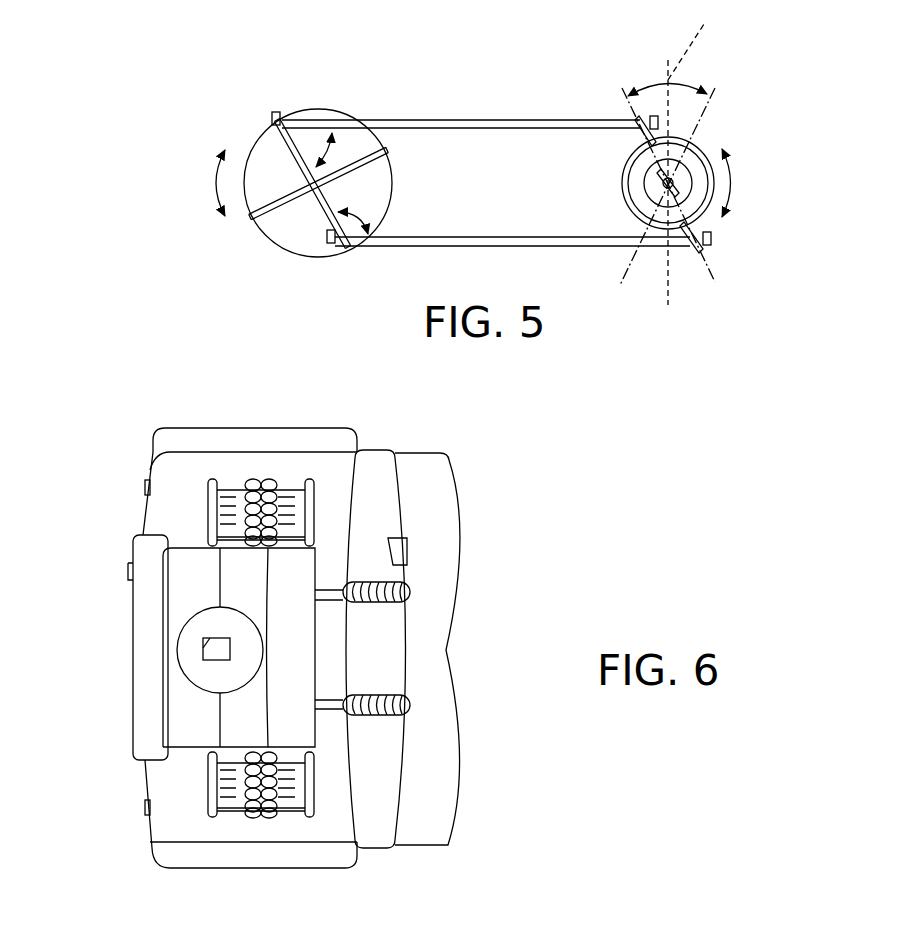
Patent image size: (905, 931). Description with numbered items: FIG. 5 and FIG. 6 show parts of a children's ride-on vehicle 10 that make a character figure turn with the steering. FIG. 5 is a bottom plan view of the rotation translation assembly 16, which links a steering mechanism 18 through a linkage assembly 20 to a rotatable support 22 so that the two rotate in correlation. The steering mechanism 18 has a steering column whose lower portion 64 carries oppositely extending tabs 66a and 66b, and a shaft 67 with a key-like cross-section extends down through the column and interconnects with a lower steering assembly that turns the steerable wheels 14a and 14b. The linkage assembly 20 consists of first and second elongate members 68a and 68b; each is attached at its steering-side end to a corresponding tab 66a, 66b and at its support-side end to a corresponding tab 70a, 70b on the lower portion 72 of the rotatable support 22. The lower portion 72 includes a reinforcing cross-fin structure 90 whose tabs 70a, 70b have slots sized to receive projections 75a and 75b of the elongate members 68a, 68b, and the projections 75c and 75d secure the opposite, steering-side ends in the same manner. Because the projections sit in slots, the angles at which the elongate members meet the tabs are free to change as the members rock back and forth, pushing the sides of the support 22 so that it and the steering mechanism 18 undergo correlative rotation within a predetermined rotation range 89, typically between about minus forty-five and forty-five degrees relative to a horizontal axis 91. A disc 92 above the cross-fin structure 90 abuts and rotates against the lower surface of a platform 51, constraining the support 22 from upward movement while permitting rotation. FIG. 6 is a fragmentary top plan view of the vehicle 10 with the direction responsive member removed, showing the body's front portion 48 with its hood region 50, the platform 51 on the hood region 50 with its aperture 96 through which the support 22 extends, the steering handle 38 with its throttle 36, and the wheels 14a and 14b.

In FIG. 6, the children's ride-on vehicle 10 is at (120, 450).
In FIG. 6, the steerable wheel 14a is at (280, 868).
In FIG. 6, the steerable wheel 14b is at (280, 428).
In FIG. 5, the rotation translation assembly 16 is at (600, 283).
In FIG. 5, the steering mechanism 18 is at (727, 180).
In FIG. 5, the linkage assembly 20 is at (463, 96).
In FIG. 5, the rotatable support 22 is at (333, 92).
In FIG. 6, the throttle 36 is at (410, 548).
In FIG. 6, the steering handle 38 is at (395, 508).
In FIG. 6, the front portion 48 is at (225, 470).
In FIG. 6, the hood region 50 is at (170, 722).
In FIG. 6, the platform 51 is at (180, 660).
In FIG. 5, the lower portion of steering column 64 is at (697, 147).
In FIG. 5, the tab 66a is at (637, 117).
In FIG. 5, the tab 66b is at (697, 248).
In FIG. 5, the shaft 67 is at (657, 181).
In FIG. 5, the first elongate member 68a is at (493, 130).
In FIG. 5, the second elongate member 68b is at (440, 237).
In FIG. 5, the tab 70a is at (292, 145).
In FIG. 5, the tab 70b is at (340, 212).
In FIG. 5, the lower portion of rotatable support 72 is at (314, 222).
In FIG. 5, the projection 75a is at (272, 118).
In FIG. 5, the projection 75b is at (327, 245).
In FIG. 5, the belt clip 75c is at (652, 115).
In FIG. 5, the belt clip 75d is at (712, 240).
In FIG. 5, the predetermined rotation range 89 is at (682, 85).
In FIG. 5, the reinforcing cross-fin structure 90 is at (282, 208).
In FIG. 5, the horizontal axis 91 is at (671, 155).
In FIG. 5, the disc 92 is at (251, 212).
In FIG. 6, the aperture 96 is at (203, 648).